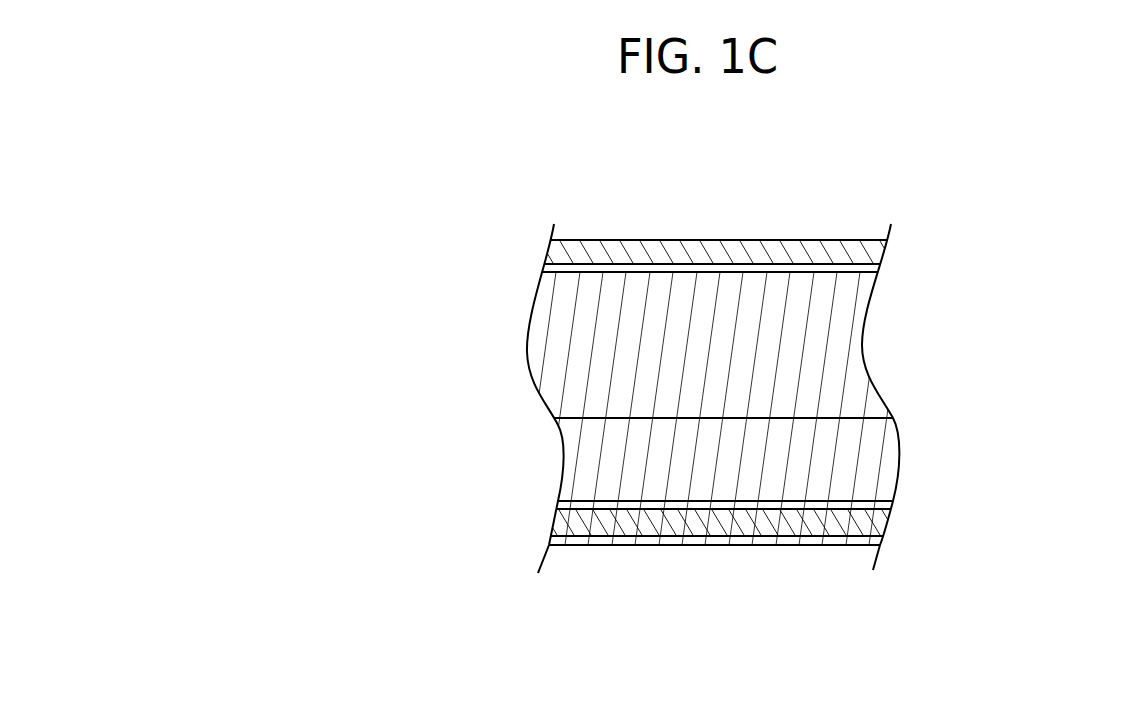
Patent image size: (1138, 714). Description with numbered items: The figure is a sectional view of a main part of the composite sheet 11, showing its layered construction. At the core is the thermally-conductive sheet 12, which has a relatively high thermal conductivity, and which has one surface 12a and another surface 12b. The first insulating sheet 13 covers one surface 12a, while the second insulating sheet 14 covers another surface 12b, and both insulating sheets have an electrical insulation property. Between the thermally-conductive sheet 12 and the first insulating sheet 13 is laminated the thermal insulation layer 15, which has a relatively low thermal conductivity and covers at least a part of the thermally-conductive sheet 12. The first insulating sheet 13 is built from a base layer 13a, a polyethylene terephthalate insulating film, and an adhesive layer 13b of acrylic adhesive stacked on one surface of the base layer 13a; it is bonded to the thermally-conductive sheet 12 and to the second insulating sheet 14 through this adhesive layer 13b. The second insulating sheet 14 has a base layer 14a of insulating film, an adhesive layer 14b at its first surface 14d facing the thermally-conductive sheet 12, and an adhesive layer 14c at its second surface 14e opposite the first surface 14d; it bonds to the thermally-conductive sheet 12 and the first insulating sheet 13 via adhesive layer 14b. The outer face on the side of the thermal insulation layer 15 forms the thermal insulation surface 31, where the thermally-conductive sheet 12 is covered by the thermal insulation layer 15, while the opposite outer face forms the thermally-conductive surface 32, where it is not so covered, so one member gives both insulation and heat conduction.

The composite sheet 11 is at (895, 211).
The thermal insulation surface 31 is at (713, 240).
The thermally-conductive surface 32 is at (725, 543).
The first insulating sheet 13 is at (775, 233).
The base layer 13a is at (871, 253).
The adhesive layer 13b is at (872, 271).
The thermal insulation layer 15 is at (562, 357).
The thermally-conductive sheet 12 is at (676, 476).
The one surface 12a is at (584, 417).
The another surface 12b is at (567, 514).
The second insulating sheet 14 is at (802, 544).
The base layer 14a is at (886, 526).
The adhesive layer 14b is at (893, 505).
The adhesive layer 14c is at (882, 537).
The first surface 14d is at (893, 497).
The second surface 14e is at (770, 593).